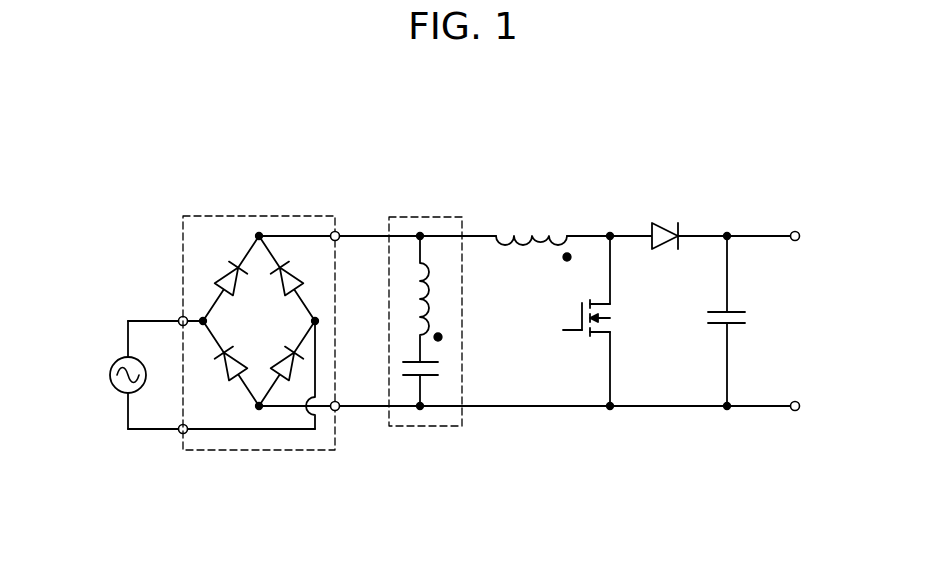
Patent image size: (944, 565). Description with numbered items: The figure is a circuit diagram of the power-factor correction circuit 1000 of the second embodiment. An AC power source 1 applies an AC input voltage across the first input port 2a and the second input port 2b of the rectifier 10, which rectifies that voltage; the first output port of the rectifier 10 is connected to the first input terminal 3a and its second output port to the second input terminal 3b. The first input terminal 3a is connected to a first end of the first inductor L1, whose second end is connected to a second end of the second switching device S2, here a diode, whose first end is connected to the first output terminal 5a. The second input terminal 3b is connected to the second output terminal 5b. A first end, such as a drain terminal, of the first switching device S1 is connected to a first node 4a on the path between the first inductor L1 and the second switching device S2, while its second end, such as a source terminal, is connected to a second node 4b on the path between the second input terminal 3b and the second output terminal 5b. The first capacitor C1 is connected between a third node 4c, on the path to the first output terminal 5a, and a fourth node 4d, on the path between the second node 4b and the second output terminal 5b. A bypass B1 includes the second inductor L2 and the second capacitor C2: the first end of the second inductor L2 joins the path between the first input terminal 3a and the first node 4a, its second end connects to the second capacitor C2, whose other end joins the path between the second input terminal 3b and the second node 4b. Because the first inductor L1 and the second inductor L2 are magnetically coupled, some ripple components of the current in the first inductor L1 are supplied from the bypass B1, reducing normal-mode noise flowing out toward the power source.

The power-factor correction circuit 1000 is at (477, 110).
The AC power source 1 is at (114, 362).
The first input port 2a is at (181, 317).
The second input port 2b is at (181, 433).
The rectifier 10 is at (272, 215).
The first input terminal 3a is at (339, 232).
The second input terminal 3b is at (339, 410).
The bypass B1 is at (447, 295).
The second inductor L2 is at (438, 303).
The second capacitor C2 is at (440, 370).
The first inductor L1 is at (533, 232).
The first switching device S1 is at (606, 321).
The second switching device S2 is at (665, 219).
The first capacitor C1 is at (744, 321).
The first node 4a is at (608, 232).
The second node 4b is at (612, 410).
The third node 4c is at (729, 232).
The fourth node 4d is at (729, 410).
The first output terminal 5a is at (811, 236).
The second output terminal 5b is at (811, 408).